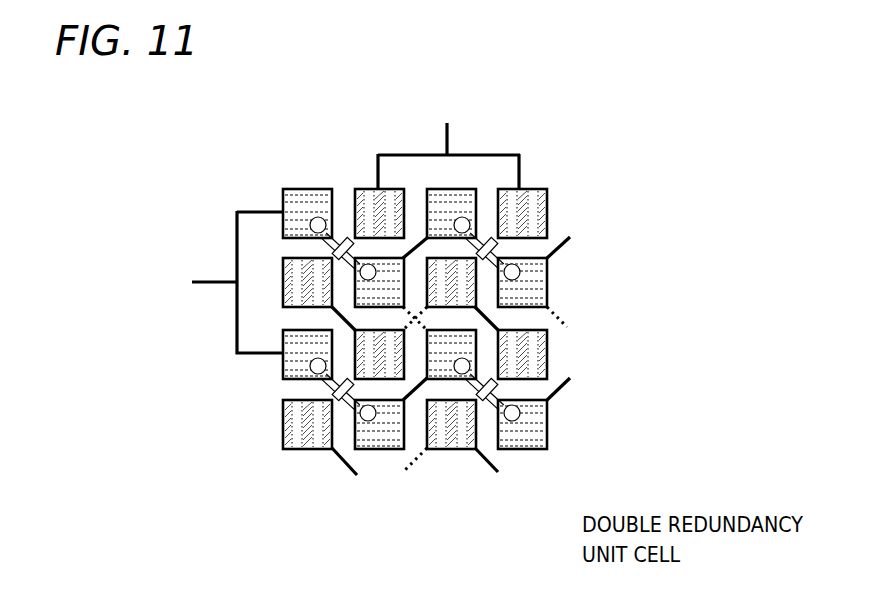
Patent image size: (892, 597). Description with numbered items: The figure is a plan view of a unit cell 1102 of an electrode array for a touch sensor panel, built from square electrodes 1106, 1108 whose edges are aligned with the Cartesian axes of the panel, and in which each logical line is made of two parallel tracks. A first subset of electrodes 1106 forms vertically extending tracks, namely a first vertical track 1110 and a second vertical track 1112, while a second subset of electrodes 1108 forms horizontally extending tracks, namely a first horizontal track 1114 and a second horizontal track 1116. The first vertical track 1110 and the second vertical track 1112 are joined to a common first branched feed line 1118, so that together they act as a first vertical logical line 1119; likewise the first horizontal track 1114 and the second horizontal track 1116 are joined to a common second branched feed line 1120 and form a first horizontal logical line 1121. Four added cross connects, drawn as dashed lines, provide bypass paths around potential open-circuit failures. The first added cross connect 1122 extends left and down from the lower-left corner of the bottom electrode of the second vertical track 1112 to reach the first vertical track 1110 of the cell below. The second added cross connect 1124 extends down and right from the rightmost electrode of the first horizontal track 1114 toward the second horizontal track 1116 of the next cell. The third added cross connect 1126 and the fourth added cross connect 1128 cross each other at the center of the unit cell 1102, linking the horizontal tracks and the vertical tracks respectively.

The unit cell 1102 is at (473, 56).
The first subset of electrodes 1106 is at (295, 260).
The second subset of electrodes 1108 is at (355, 300).
The first vertical track 1110 is at (388, 153).
The second vertical track 1112 is at (525, 203).
The first horizontal track 1114 is at (287, 187).
The second horizontal track 1116 is at (283, 332).
The first branched feed line 1118 is at (453, 155).
The first vertical logical line 1119 is at (453, 150).
The second branched feed line 1120 is at (237, 268).
The first horizontal logical line 1121 is at (222, 295).
The first added cross connect 1122 is at (413, 462).
The second added cross connect 1124 is at (566, 327).
The third added cross connect 1126 is at (410, 313).
The fourth added cross connect 1128 is at (427, 313).